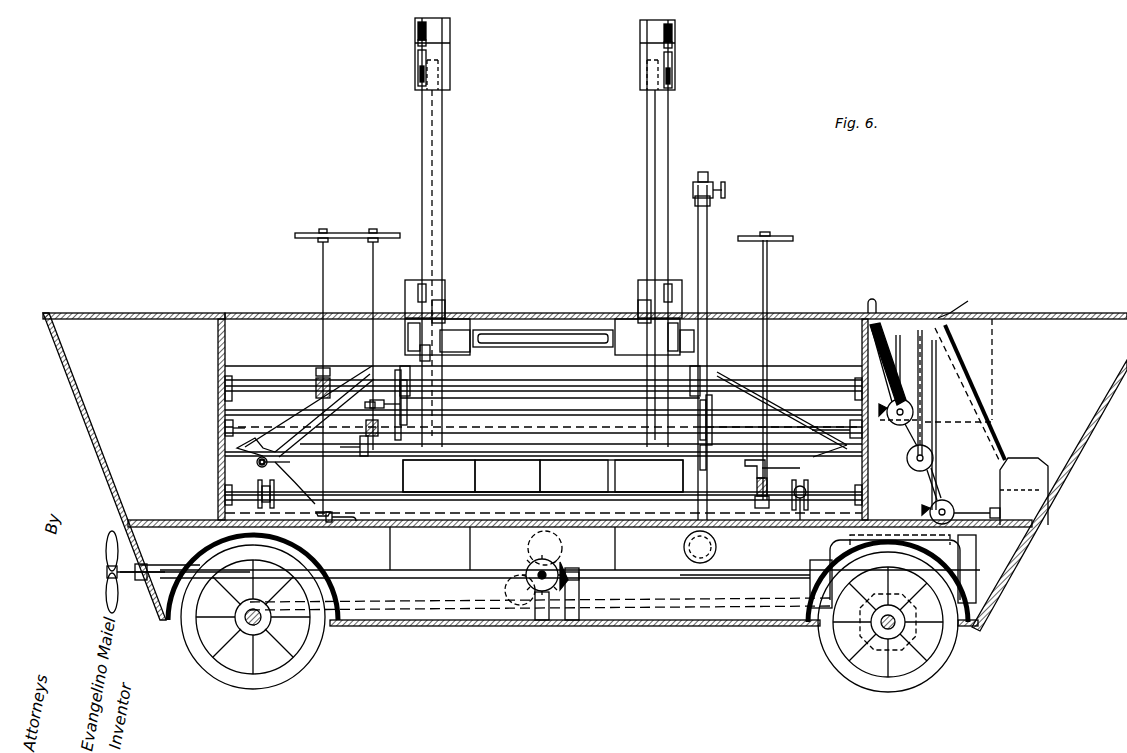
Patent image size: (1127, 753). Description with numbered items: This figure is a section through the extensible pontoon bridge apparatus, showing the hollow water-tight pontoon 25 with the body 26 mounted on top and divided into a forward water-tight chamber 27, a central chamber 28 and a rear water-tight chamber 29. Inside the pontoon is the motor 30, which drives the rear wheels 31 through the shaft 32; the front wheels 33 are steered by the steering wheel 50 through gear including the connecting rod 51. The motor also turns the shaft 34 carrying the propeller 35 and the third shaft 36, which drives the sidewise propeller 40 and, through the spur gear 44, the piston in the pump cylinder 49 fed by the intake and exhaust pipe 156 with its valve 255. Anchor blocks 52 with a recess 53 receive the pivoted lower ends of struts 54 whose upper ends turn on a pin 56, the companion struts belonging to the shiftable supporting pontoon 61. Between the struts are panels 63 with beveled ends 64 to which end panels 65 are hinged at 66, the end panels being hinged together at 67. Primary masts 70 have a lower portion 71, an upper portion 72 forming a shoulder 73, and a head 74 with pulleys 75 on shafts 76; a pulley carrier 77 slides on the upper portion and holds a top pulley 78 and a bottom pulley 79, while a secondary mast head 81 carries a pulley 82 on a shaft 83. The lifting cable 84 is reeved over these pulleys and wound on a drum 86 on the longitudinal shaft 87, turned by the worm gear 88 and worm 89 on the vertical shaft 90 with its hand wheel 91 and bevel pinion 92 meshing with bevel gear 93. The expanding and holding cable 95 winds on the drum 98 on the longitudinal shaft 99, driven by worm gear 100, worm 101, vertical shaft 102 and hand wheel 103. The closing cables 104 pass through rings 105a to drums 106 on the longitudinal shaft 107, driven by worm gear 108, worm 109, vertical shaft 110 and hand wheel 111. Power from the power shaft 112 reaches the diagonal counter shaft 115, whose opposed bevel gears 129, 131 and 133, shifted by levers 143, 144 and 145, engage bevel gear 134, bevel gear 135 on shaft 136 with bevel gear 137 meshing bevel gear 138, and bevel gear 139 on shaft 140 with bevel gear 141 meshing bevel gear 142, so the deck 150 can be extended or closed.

The pontoon 25 is at (375, 627).
The body 26 is at (78, 414).
The forward water-tight chamber 27 is at (1104, 325).
The central chamber 28 is at (542, 319).
The rear water-tight chamber 29 is at (170, 335).
The motor 30 is at (990, 600).
The rear wheels 31 is at (205, 655).
The shaft 32 is at (498, 608).
The front wheels 33 is at (832, 655).
The shaft 34 is at (378, 570).
The propeller 35 is at (112, 548).
The third shaft 36 is at (758, 572).
The propeller 40 is at (525, 553).
The spur gear 44 is at (546, 518).
The pump cylinder 49 is at (684, 543).
The steering wheel 50 is at (905, 315).
The connecting rod 51 is at (965, 548).
The anchor blocks 52 is at (614, 476).
The recess 53 is at (470, 478).
The strut 54 is at (466, 444).
The pin 56 is at (456, 322).
The supporting pontoon 61 is at (300, 492).
The panels 63 is at (368, 462).
The beveled ends 64 is at (292, 428).
The end panels 65 is at (300, 416).
The hinge 66 is at (258, 460).
The hinge 67 is at (258, 430).
The primary masts 70 is at (450, 155).
The lower portion 71 is at (455, 412).
The upper portion 72 is at (443, 188).
The shoulder 73 is at (462, 366).
The head 74 is at (452, 70).
The pulleys 75 is at (417, 68).
The shafts 76 is at (419, 80).
The pulley carrier 77 is at (444, 298).
The top pulley 78 is at (418, 292).
The bottom pulley 79 is at (440, 340).
The head 81 is at (451, 32).
The pulley 82 is at (417, 25).
The shaft 83 is at (417, 42).
The lifting cable 84 is at (421, 187).
The drum 86 is at (462, 380).
The longitudinal shaft 87 is at (550, 396).
The worm gear 88 is at (316, 378).
The worm 89 is at (332, 378).
The vertical shaft 90 is at (322, 290).
The hand wheel 91 is at (296, 235).
The bevel pinion 92 is at (320, 518).
The bevel gear 93 is at (350, 518).
The expanding and holding cable 95 is at (400, 375).
The drum 98 is at (398, 438).
The longitudinal shaft 99 is at (560, 436).
The worm gear 100 is at (366, 425).
The worm 101 is at (363, 444).
The vertical shaft 102 is at (372, 272).
The hand wheel 103 is at (360, 233).
The closing cables 104 is at (224, 492).
The rings 105a is at (256, 457).
The drums 106 is at (258, 500).
The longitudinal shaft 107 is at (300, 488).
The worm gear 108 is at (756, 483).
The worm 109 is at (754, 503).
The vertical shaft 110 is at (768, 280).
The hand wheel 111 is at (800, 235).
The power shaft 112 is at (976, 509).
The diagonal counter shaft 115 is at (878, 378).
The bevel gear 129 is at (928, 468).
The bevel gear 131 is at (934, 458).
The bevel gear 133 is at (896, 422).
The bevel gear 134 is at (930, 513).
The bevel gear 135 is at (912, 458).
The shaft 136 is at (905, 478).
The bevel gear 137 is at (710, 440).
The bevel gear 138 is at (748, 466).
The bevel gear 139 is at (860, 406).
The shaft 140 is at (740, 425).
The bevel gear 141 is at (378, 410).
The bevel gear 142 is at (366, 404).
The lever 143 is at (938, 440).
The lever 144 is at (920, 407).
The lever 145 is at (872, 345).
The deck 150 is at (222, 316).
The intake and exhaust pipe 156 is at (708, 222).
The valve 255 is at (726, 185).